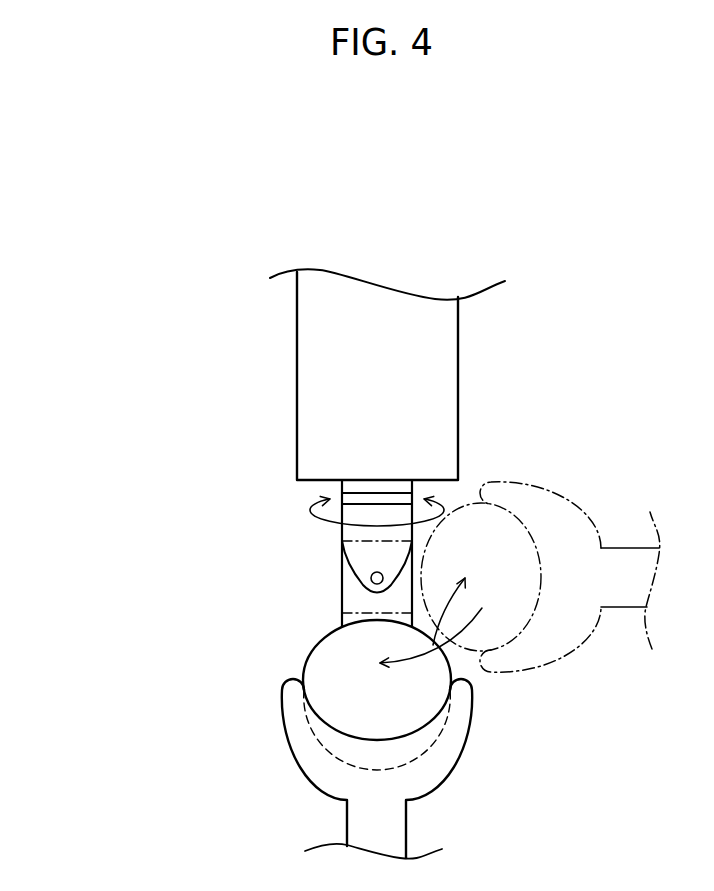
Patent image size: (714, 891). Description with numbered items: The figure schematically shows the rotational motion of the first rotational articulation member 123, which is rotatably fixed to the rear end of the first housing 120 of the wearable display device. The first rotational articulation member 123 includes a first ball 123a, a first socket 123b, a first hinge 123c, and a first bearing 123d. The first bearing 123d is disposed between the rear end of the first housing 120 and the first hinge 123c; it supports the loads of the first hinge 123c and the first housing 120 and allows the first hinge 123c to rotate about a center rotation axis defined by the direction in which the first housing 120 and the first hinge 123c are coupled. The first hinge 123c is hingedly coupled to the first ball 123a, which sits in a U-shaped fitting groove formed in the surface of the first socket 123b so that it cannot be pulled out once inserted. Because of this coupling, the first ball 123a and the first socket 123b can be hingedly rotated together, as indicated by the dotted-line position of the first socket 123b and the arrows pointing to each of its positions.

The first housing 120 is at (458, 358).
The first rotational articulation member 123 is at (70, 461).
The first ball 123a is at (326, 665).
The first socket 123b is at (407, 828).
The first hinge 123c is at (365, 556).
The first bearing 123d is at (387, 498).